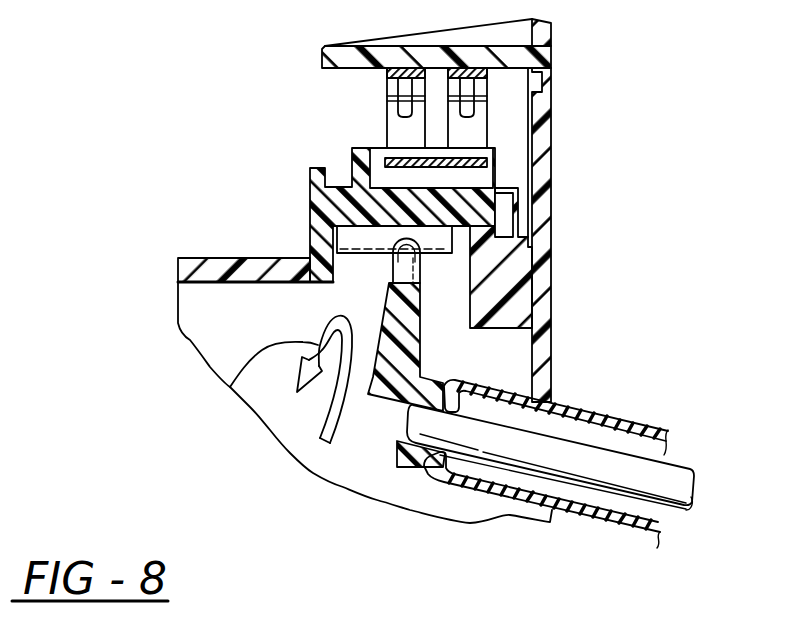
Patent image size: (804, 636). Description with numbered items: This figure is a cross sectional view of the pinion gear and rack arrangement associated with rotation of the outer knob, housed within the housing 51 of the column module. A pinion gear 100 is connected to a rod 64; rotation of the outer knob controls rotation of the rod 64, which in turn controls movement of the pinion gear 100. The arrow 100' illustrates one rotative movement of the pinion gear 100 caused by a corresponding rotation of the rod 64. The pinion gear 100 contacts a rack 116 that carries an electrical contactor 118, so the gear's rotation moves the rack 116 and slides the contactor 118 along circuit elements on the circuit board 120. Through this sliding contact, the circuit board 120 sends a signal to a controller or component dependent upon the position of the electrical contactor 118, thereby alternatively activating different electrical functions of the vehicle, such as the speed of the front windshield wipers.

The housing 51 is at (535, 301).
The rod 64 is at (608, 463).
The pinion gear 100 is at (453, 386).
The arrow 100' is at (350, 402).
The rack 116 is at (500, 256).
The electrical contactor 118 is at (472, 133).
The circuit board 120 is at (353, 69).